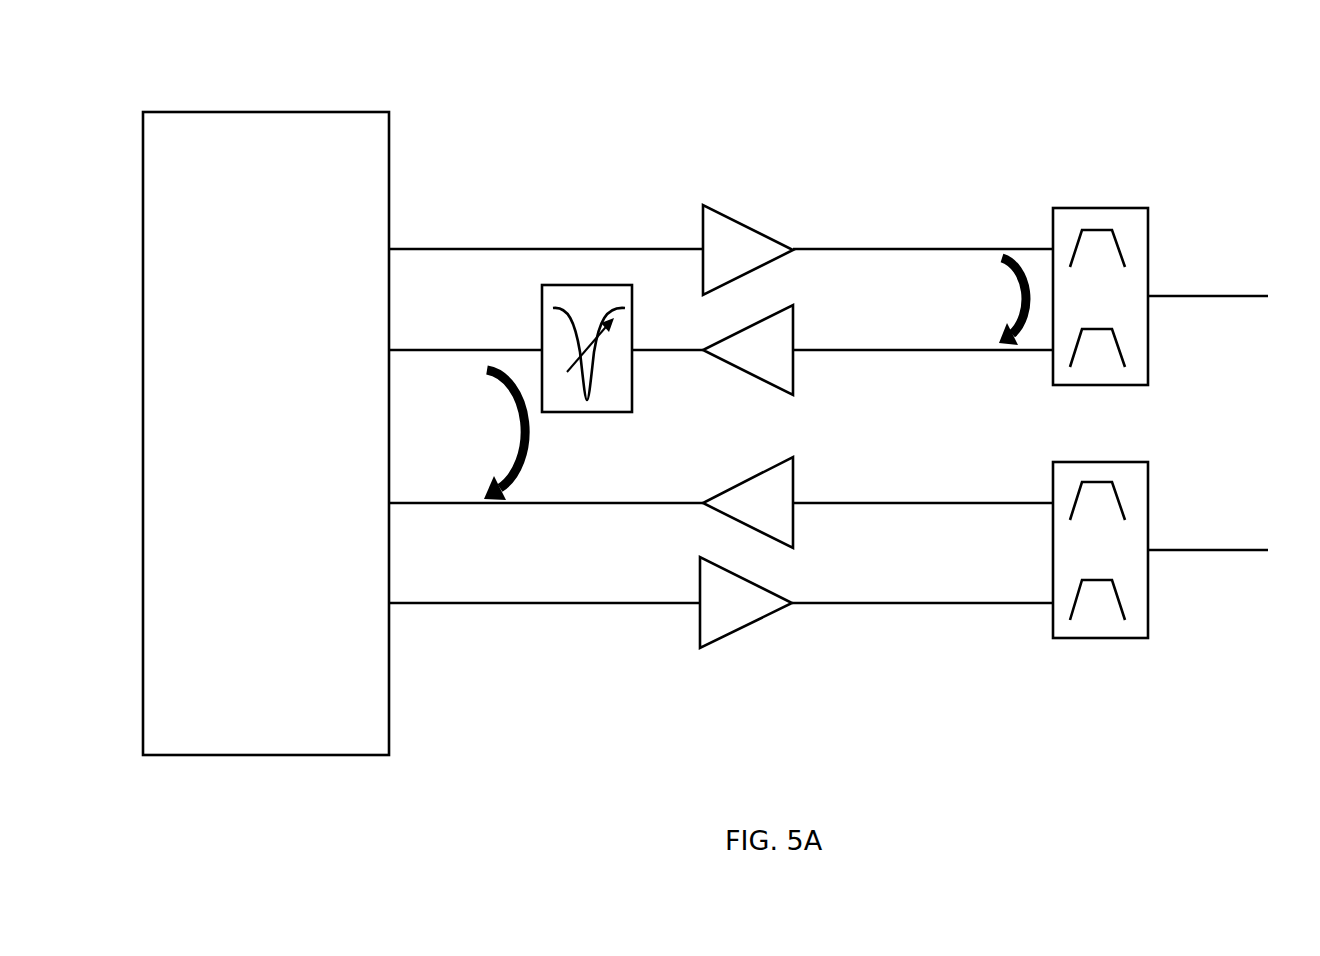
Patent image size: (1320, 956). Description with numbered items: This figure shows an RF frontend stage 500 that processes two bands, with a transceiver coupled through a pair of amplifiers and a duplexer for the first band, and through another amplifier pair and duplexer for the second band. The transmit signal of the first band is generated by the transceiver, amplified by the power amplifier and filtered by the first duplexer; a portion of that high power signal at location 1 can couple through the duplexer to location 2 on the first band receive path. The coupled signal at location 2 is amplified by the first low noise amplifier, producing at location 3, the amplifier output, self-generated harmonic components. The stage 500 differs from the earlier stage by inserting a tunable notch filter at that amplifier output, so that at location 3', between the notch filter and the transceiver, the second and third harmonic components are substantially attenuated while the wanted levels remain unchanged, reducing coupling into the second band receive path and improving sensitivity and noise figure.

The RF frontend stage 500 is at (163, 43).
The location on the first band transmit path 1 is at (1001, 224).
The location on the first band receive path 2 is at (991, 329).
The location at the output of LNA1 3 is at (667, 327).
The location at the output of the notch filter 3' is at (465, 327).